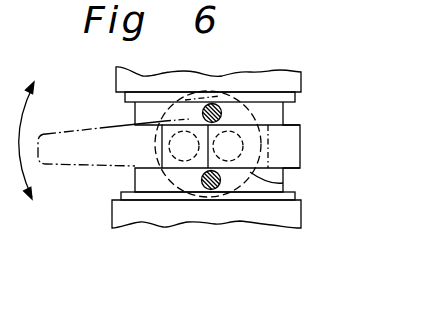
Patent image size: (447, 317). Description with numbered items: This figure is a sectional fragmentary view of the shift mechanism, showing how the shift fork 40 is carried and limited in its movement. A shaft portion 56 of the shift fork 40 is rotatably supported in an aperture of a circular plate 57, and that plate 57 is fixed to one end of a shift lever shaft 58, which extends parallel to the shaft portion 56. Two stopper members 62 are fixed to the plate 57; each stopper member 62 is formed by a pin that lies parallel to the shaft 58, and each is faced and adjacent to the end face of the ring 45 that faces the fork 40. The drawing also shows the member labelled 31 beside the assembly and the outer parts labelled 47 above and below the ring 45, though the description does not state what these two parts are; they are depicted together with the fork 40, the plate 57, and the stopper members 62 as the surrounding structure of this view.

The arm 31 is at (134, 180).
The shift fork 40 is at (300, 143).
The ring 45 is at (295, 97).
The jaw member 47 is at (301, 83).
The shaft portion 56 is at (241, 147).
The circular plate 57 is at (283, 183).
The shift lever shaft 58 is at (184, 160).
The stopper member 62 is at (222, 106).